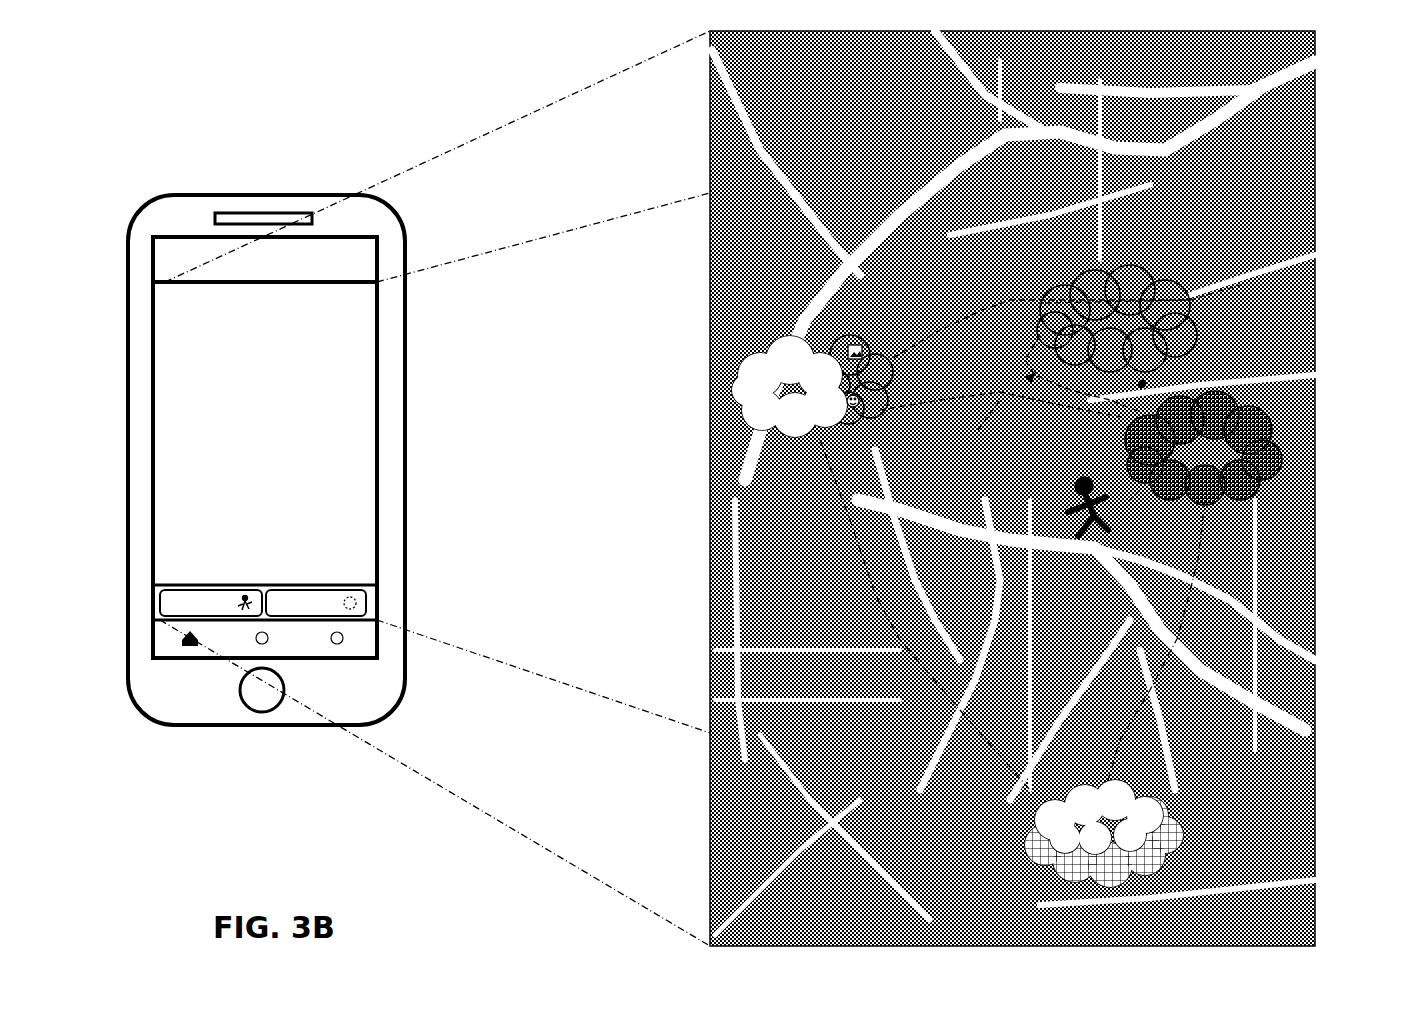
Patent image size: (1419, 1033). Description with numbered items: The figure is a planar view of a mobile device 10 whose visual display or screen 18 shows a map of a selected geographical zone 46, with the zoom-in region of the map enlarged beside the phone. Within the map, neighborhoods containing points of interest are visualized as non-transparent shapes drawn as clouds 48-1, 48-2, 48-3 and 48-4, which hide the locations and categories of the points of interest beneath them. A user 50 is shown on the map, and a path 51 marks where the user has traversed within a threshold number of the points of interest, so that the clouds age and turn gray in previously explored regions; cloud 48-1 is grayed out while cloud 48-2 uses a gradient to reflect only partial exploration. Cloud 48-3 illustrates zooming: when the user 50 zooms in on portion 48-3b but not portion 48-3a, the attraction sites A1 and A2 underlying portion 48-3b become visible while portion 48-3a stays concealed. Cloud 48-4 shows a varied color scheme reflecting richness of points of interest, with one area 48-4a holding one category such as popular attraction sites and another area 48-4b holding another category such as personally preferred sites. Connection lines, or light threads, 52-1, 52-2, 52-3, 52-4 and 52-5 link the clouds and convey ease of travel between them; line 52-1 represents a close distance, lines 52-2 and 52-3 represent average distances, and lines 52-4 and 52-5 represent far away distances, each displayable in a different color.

The mobile device 10 is at (245, 198).
The visual display or screen 18 is at (383, 394).
The map of selected geographical zone 46 is at (1318, 196).
The cloud 48-1 is at (1197, 320).
The cloud 48-2 is at (1278, 440).
The cloud 48-3 is at (756, 377).
The portion of cloud 48-3a is at (789, 386).
The portion of cloud 48-3b is at (856, 379).
The cloud 48-4 is at (1205, 833).
The area of cloud 48-4a is at (1099, 817).
The area of cloud 48-4b is at (1104, 842).
The user 50 is at (1072, 506).
The path 51 is at (1030, 378).
The connection line 52-1 is at (1147, 383).
The connection line 52-2 is at (980, 308).
The connection line 52-3 is at (975, 432).
The connection line 52-4 is at (876, 596).
The connection line 52-5 is at (1185, 640).
The attraction site A1 is at (857, 344).
The attraction site A2 is at (855, 408).